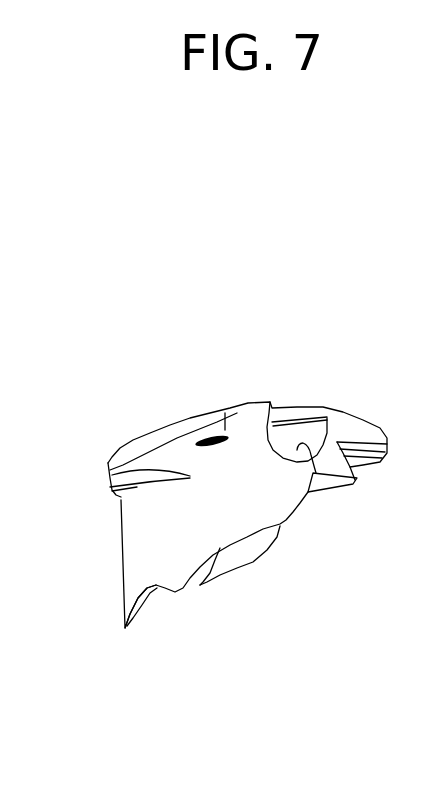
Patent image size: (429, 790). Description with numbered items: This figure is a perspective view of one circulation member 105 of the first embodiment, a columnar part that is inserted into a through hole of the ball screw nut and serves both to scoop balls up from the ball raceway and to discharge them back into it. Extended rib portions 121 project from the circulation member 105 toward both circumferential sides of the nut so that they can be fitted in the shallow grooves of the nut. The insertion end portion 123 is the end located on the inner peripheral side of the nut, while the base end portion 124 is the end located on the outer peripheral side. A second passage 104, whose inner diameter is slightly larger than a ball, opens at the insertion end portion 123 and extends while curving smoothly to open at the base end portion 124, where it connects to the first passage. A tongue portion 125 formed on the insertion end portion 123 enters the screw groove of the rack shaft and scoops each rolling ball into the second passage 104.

The circulation member 105 is at (142, 348).
The extended rib portion 121 is at (106, 473).
The base end portion 124 is at (248, 410).
The second passage 104 is at (315, 478).
The tongue portion 125 is at (242, 556).
The insertion end portion 123 is at (163, 587).